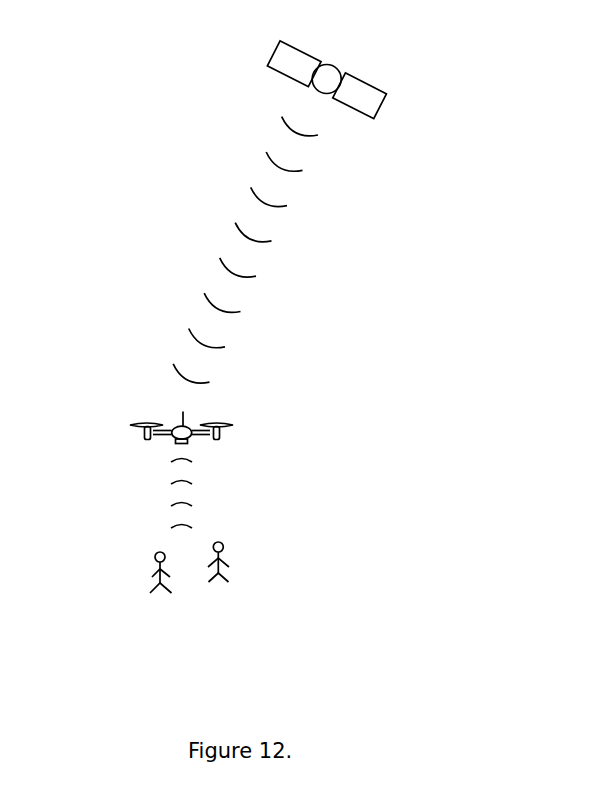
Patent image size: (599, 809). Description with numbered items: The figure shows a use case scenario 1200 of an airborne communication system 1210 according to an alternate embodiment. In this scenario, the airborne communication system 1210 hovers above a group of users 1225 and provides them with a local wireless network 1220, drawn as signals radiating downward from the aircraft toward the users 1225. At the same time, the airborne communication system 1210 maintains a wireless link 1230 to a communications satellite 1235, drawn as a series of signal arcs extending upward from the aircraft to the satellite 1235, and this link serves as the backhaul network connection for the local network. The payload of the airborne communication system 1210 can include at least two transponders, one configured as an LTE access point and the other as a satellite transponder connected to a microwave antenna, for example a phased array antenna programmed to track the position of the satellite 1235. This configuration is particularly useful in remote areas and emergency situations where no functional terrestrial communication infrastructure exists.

The use case scenario 1200 is at (264, 364).
The airborne communication system 1210 is at (177, 428).
The local wireless network 1220 is at (203, 485).
The users 1225 is at (145, 557).
The wireless link 1230 is at (265, 290).
The communications satellite 1235 is at (360, 97).